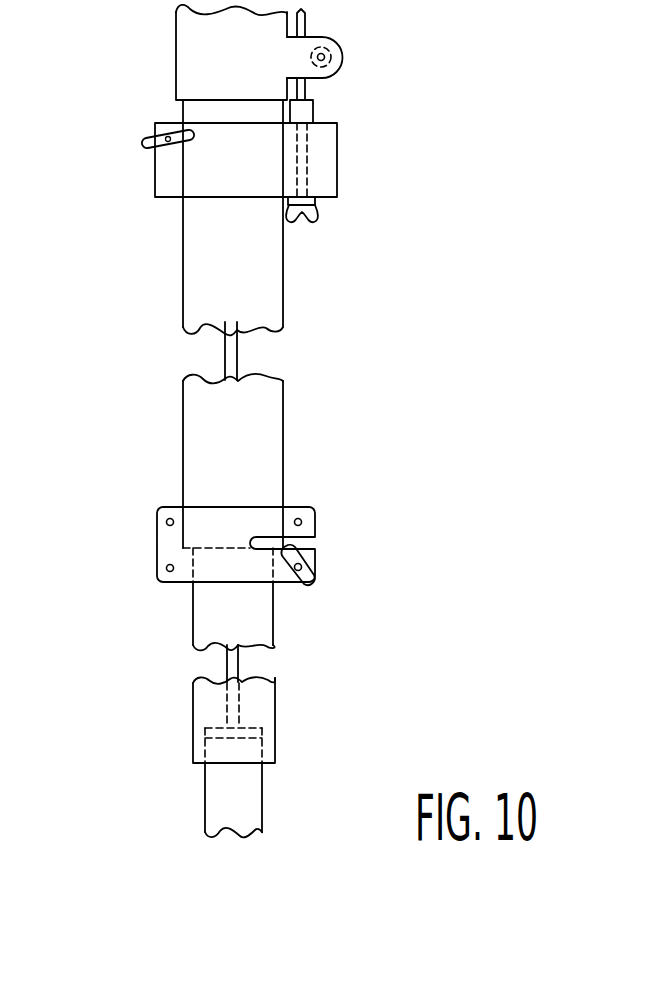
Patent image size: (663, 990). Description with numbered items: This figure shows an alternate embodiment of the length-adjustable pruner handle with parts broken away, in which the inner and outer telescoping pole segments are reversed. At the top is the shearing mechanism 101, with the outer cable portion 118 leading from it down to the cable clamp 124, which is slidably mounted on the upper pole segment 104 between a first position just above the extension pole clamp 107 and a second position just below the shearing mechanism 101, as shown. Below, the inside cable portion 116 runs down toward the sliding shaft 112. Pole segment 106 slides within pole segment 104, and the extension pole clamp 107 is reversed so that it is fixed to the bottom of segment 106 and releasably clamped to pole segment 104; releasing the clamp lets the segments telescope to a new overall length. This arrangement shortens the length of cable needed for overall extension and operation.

The shearing mechanism 101 is at (188, 53).
The outer cable portion 118 is at (306, 29).
The cable clamp 124 is at (338, 163).
The inside cable portion 116 is at (238, 349).
The pole segment 106 is at (203, 450).
The extension pole clamp 107 is at (302, 497).
The pole segment 104 is at (200, 706).
The sliding shaft 112 is at (212, 794).